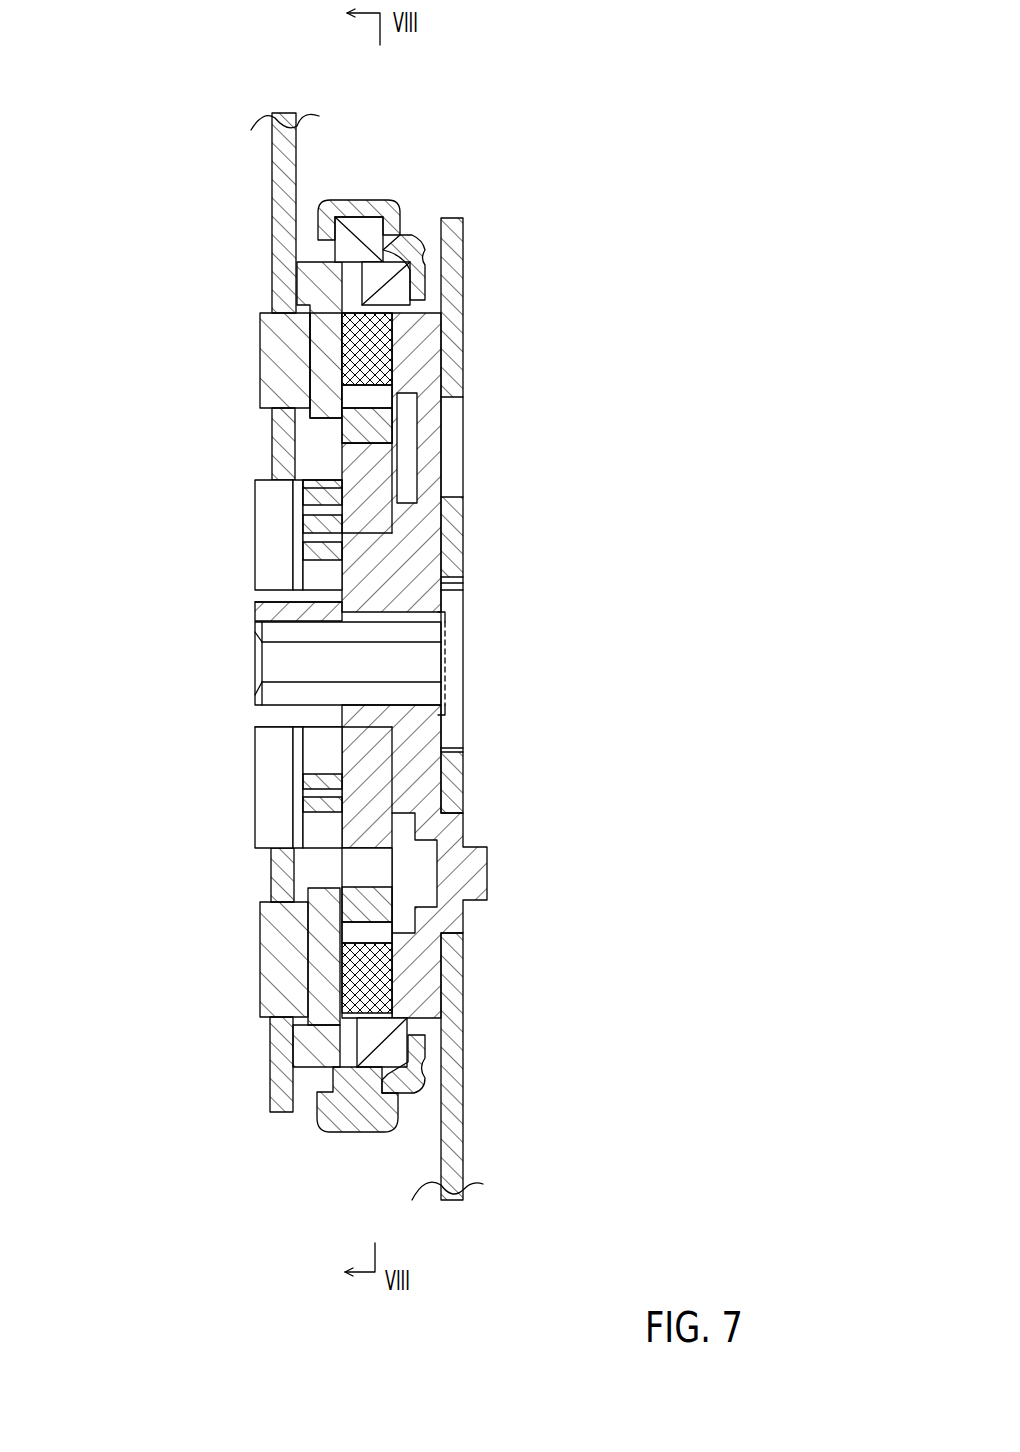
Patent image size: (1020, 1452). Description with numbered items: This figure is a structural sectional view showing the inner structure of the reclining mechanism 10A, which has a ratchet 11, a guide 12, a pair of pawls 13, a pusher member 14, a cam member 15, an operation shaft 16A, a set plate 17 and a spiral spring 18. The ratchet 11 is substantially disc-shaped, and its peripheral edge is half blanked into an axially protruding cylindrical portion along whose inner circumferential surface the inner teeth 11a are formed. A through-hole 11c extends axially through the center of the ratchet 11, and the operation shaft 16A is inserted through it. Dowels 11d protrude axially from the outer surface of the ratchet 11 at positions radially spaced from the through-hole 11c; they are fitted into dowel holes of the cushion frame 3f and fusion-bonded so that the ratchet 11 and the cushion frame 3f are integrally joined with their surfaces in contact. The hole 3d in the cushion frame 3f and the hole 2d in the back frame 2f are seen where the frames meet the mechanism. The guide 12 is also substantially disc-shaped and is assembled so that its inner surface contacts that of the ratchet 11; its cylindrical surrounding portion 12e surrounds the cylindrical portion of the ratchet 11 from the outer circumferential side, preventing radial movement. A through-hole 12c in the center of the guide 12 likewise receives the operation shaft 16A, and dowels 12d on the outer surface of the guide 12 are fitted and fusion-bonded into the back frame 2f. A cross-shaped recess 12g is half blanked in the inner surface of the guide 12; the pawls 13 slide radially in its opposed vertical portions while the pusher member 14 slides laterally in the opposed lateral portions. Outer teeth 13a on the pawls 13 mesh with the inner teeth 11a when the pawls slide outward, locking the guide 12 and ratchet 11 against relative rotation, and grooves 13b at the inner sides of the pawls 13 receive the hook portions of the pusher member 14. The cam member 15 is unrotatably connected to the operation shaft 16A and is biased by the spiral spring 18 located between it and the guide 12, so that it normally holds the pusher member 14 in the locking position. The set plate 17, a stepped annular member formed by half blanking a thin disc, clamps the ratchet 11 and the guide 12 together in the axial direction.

The reclining mechanism 10A is at (452, 172).
The set plate 17 is at (363, 196).
The back frame 2f is at (280, 194).
The dowels 12d is at (272, 326).
The pawls 13 is at (355, 357).
The hole 2d is at (276, 378).
The recess 12g is at (350, 413).
The guide 12 is at (325, 446).
The cam member 15 is at (362, 575).
The through-hole 12c is at (402, 662).
The spiral spring 18 is at (318, 808).
The surrounding portion 12e is at (353, 1084).
The inner teeth 11a is at (448, 322).
The outer teeth 13a is at (448, 322).
The grooves 13b is at (363, 403).
The dowels 11d is at (452, 418).
The hole 3d is at (445, 450).
The pusher member 14 is at (370, 483).
The operation shaft 16A is at (397, 638).
The through-hole 11c is at (412, 662).
The ratchet 11 is at (413, 767).
The cushion frame 3f is at (450, 1073).